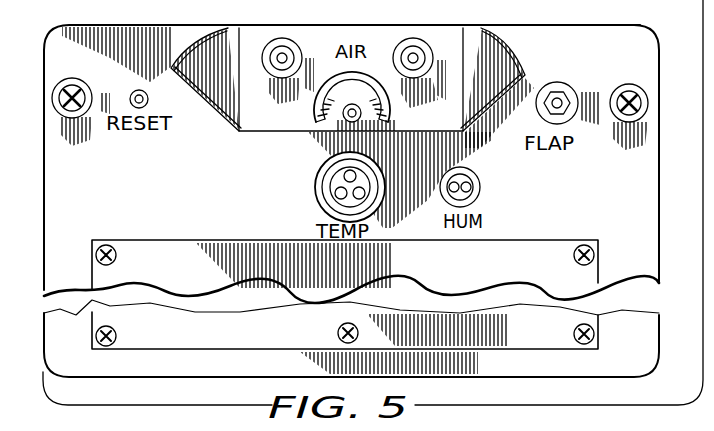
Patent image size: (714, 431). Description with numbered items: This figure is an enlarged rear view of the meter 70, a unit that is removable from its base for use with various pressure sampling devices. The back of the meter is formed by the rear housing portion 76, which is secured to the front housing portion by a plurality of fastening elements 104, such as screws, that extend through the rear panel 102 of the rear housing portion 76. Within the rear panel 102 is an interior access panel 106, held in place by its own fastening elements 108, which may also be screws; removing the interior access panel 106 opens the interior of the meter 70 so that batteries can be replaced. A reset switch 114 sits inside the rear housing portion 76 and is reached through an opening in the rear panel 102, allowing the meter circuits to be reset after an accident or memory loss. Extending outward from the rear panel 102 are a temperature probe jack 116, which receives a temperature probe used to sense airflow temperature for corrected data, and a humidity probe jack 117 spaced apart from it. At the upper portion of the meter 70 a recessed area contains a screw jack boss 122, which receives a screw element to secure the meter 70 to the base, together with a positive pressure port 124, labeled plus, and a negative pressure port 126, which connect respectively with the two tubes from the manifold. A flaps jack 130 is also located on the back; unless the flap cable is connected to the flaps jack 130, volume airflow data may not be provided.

The meter 70 is at (613, 16).
The rear housing portion 76 is at (660, 146).
The rear panel 102 is at (641, 268).
The fastening elements 104 is at (631, 124).
The interior access panel 106 is at (505, 278).
The fastening elements 108 is at (583, 245).
The reset switch 114 is at (133, 94).
The temperature probe jack 116 is at (317, 170).
The humidity probe jack 117 is at (483, 182).
The screw jack boss 122 is at (386, 88).
The positive pressure port 124 is at (281, 38).
The negative pressure port 126 is at (410, 38).
The flaps jack 130 is at (578, 69).